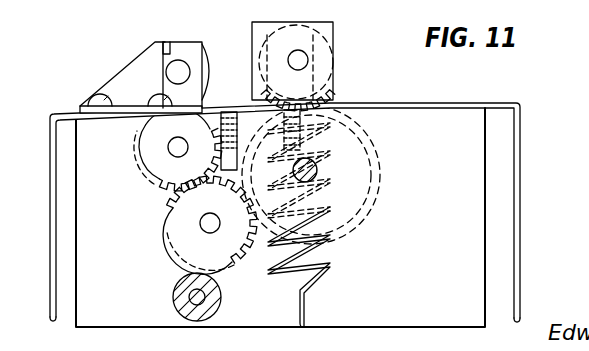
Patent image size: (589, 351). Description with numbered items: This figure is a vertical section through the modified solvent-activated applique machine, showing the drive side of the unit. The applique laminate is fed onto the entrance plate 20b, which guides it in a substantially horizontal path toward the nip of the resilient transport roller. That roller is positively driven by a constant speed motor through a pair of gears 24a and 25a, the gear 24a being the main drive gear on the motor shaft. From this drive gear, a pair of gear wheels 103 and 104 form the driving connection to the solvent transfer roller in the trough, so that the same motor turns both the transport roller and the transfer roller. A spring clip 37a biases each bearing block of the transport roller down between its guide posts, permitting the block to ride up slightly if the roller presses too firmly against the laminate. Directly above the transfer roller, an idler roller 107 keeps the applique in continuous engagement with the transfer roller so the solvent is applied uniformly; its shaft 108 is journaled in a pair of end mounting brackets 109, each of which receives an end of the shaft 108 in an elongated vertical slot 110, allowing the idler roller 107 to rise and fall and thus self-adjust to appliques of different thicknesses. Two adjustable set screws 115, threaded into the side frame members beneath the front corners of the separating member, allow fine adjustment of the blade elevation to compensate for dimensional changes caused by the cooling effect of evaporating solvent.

The end mounting bracket 109 is at (126, 64).
The elongated vertical slot 110 is at (168, 47).
The idler roller 107 is at (185, 41).
The shaft 108 is at (180, 72).
The adjustable set screw 115 is at (230, 110).
The gear 25a is at (337, 65).
The entrance plate 20b is at (425, 104).
The gear 24a is at (360, 121).
The gear wheel 103 is at (163, 190).
The gear wheel 104 is at (172, 215).
The spring clip 37a is at (330, 265).